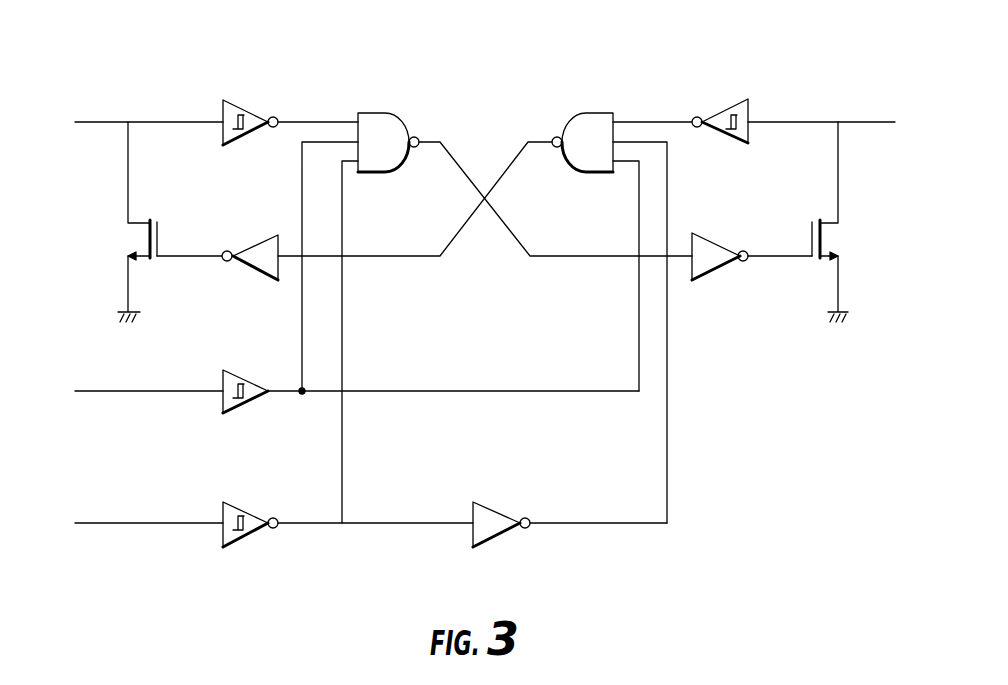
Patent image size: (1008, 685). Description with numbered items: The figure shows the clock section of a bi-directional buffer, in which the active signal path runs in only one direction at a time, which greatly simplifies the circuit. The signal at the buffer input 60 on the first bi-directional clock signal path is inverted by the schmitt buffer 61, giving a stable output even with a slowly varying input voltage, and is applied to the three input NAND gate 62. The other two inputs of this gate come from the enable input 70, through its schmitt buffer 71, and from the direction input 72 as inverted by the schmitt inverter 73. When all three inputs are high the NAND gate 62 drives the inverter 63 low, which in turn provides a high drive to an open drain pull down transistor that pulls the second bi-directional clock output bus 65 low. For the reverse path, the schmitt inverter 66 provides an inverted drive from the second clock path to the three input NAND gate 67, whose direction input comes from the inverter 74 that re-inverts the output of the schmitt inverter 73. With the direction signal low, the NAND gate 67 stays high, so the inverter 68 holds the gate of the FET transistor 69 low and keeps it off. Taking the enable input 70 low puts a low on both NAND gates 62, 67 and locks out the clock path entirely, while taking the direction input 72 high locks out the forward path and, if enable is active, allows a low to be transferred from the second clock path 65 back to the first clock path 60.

The buffer input on first bi-directional clock signal path 60 is at (118, 120).
The schmitt buffer 61 is at (247, 100).
The three input NAND gate 62 is at (370, 112).
The inverter 63 is at (707, 234).
The second bi-directional clock output bus 65 is at (883, 120).
The schmitt inverter 66 is at (720, 113).
The three input NAND gate 67 is at (593, 110).
The inverter 68 is at (262, 235).
The FET transistor 69 is at (123, 240).
The enable input 70 is at (87, 390).
The schmitt buffer 71 is at (235, 370).
The direction input 72 is at (87, 522).
The schmitt inverter 73 is at (232, 503).
The inverter 74 is at (480, 500).